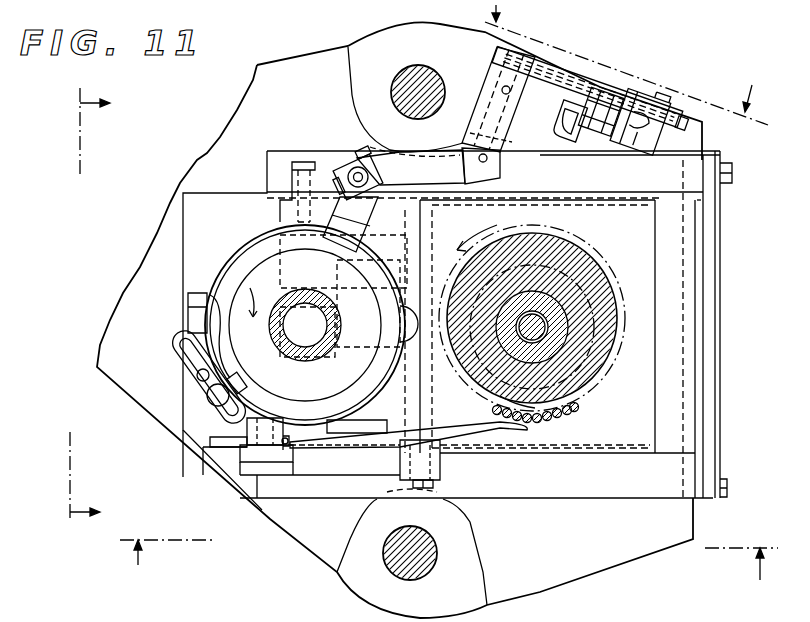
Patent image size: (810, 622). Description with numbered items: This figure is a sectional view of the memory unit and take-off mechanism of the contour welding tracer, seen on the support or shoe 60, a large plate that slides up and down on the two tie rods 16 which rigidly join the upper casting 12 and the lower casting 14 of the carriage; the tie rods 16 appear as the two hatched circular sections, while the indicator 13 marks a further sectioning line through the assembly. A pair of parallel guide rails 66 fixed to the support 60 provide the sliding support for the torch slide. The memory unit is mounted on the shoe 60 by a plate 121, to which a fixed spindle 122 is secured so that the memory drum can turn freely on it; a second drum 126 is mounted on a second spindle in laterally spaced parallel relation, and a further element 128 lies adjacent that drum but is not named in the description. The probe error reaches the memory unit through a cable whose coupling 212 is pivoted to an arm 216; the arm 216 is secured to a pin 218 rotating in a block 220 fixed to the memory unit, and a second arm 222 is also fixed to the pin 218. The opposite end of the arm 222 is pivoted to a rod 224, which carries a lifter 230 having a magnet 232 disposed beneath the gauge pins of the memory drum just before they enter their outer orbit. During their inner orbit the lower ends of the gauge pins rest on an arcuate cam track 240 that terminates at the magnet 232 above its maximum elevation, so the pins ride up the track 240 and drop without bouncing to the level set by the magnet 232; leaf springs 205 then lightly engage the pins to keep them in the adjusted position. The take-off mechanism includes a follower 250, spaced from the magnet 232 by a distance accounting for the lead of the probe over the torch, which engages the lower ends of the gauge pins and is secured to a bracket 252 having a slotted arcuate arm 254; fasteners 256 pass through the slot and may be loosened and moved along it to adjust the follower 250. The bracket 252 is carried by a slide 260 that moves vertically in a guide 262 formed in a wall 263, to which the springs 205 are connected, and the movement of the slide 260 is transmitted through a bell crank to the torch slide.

The upper casting 12 is at (449, 571).
The section line 13- 13 is at (104, 305).
The lower casting 14 is at (623, 58).
The tie rods 16 is at (388, 95).
The support 60 is at (675, 368).
The guide rails 66 is at (713, 460).
The plate 121 is at (226, 200).
The fixed spindle 122 is at (305, 325).
The second drum 126 is at (597, 393).
The chain 128 is at (570, 413).
The leaf springs 205 is at (480, 440).
The coupling 212 is at (622, 108).
The arm 216 is at (550, 88).
The pin 218 is at (540, 36).
The block 220 is at (491, 115).
The arm 222 is at (403, 168).
The rod 224 is at (345, 165).
The lifter 230 is at (357, 214).
The magnet 232 is at (270, 225).
The cam track 240 is at (385, 380).
The follower 250 is at (209, 319).
The bracket 252 is at (217, 427).
The slotted arcuate arm 254 is at (180, 355).
The fasteners 256 is at (212, 396).
The slide 260 is at (260, 469).
The guide 262 is at (289, 436).
The wall 263 is at (308, 470).